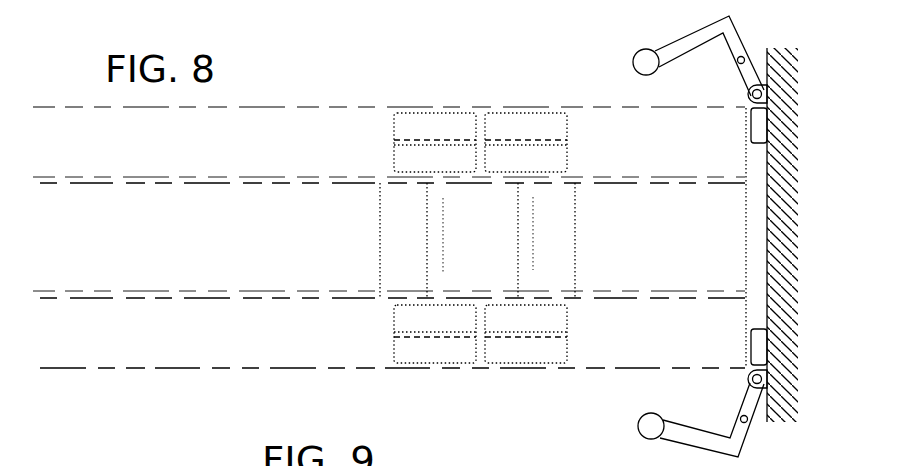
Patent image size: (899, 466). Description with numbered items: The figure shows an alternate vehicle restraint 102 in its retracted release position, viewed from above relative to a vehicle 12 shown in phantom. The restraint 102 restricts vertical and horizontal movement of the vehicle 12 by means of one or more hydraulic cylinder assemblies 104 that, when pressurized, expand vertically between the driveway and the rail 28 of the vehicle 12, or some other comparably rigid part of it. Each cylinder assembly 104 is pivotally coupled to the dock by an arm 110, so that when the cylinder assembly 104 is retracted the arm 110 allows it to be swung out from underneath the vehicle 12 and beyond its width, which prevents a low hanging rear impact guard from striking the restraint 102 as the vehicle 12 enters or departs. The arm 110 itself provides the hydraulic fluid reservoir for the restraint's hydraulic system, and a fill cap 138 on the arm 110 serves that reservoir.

The vehicle 12 is at (353, 105).
The rail 28 is at (240, 177).
The vehicle restraint 102 is at (677, 328).
The hydraulic cylinder assembly 104 is at (634, 67).
The arm 110 is at (676, 46).
The fill cap 138 is at (738, 68).